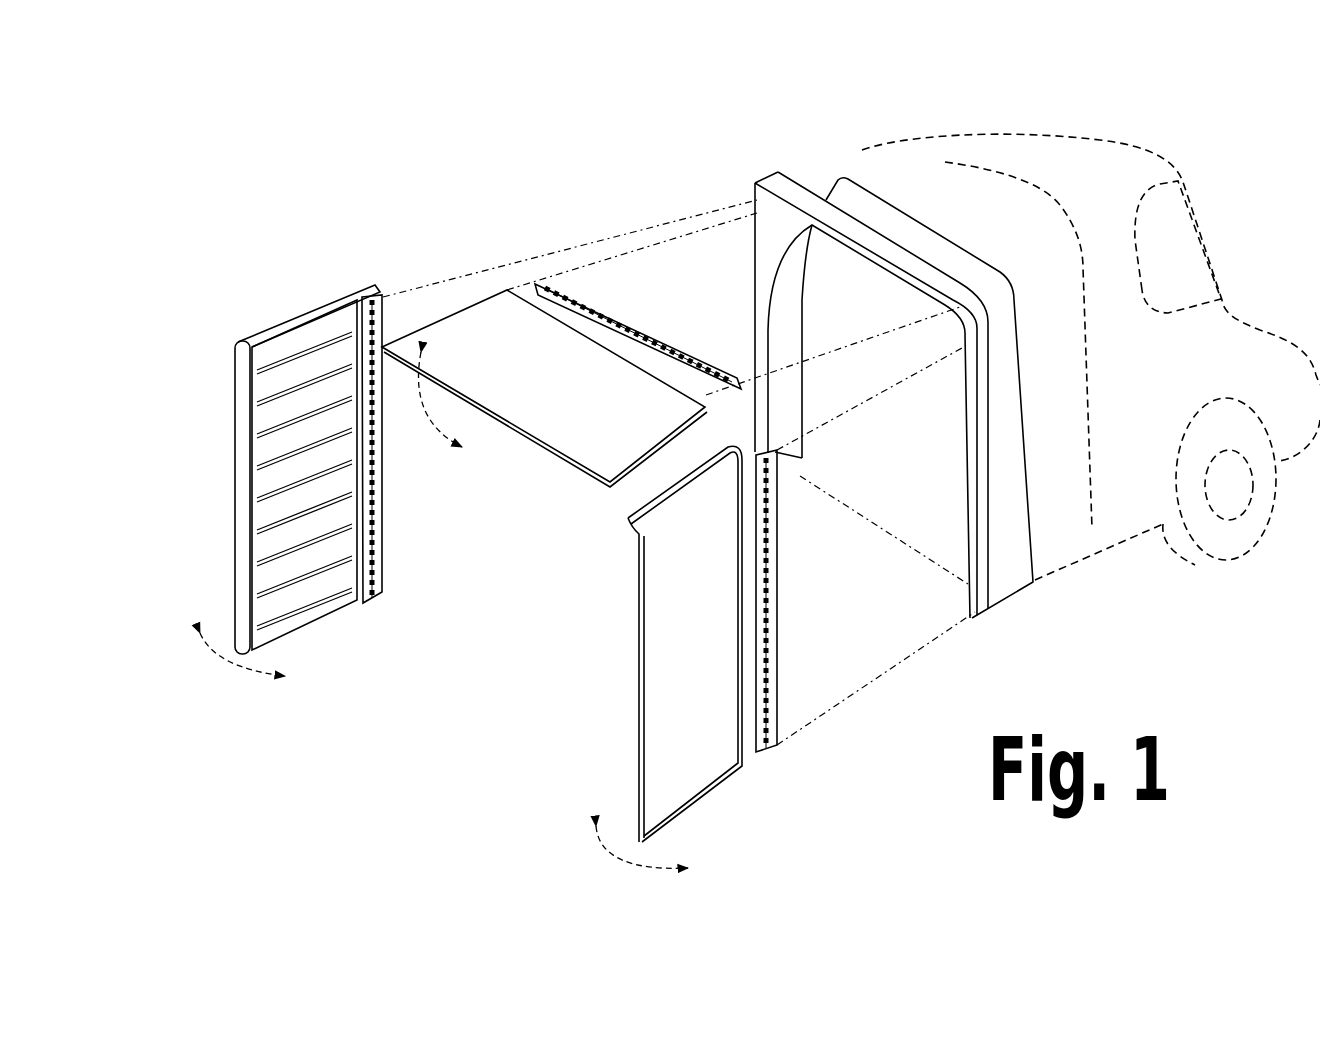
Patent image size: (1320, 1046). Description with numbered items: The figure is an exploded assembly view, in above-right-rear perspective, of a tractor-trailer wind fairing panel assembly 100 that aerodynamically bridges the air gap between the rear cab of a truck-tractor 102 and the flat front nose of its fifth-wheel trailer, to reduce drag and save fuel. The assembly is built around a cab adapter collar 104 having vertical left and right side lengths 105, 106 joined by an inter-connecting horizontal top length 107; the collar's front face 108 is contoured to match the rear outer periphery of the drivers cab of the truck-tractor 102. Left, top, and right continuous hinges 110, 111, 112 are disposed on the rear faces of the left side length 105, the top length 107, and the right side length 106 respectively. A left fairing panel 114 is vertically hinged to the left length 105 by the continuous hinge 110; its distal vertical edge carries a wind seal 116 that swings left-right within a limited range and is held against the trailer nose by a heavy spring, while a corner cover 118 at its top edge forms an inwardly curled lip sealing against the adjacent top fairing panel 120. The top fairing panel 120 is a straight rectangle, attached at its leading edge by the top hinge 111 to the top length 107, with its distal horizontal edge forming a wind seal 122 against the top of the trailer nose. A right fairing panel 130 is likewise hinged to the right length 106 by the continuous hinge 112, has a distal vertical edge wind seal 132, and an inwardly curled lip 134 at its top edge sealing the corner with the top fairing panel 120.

The tractor-trailer wind fairing panel assembly 100 is at (532, 74).
The truck-tractor 102 is at (1157, 446).
The cab adapter collar 104 is at (723, 430).
The left side length 105 is at (756, 289).
The right side length 106 is at (975, 530).
The inter-connecting top length 107 is at (920, 232).
The front face 108 is at (1022, 275).
The left continuous hinge 110 is at (384, 572).
The top hinge 111 is at (578, 291).
The right continuous hinge 112 is at (780, 727).
The left fairing panel 114 is at (298, 480).
The wind seal 116 is at (240, 468).
The corner cover 118 is at (298, 324).
The top fairing panel 120 is at (561, 387).
The wind seal 122 is at (562, 453).
The right fairing panel 130 is at (711, 657).
The wind seal 132 is at (640, 607).
The inwardly curled lip 134 is at (650, 503).